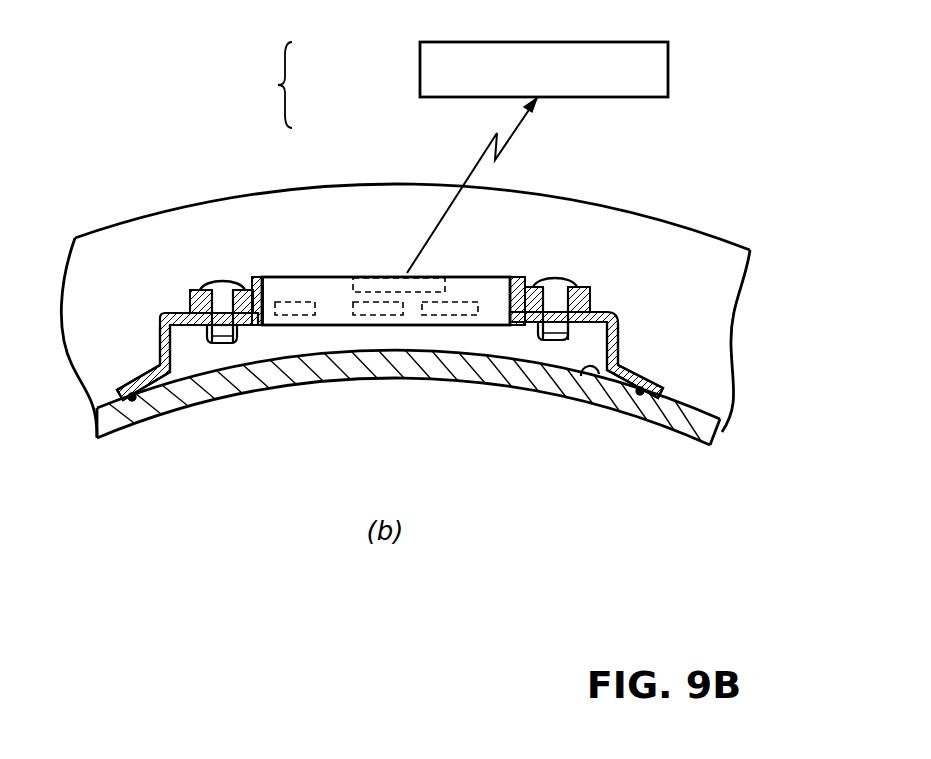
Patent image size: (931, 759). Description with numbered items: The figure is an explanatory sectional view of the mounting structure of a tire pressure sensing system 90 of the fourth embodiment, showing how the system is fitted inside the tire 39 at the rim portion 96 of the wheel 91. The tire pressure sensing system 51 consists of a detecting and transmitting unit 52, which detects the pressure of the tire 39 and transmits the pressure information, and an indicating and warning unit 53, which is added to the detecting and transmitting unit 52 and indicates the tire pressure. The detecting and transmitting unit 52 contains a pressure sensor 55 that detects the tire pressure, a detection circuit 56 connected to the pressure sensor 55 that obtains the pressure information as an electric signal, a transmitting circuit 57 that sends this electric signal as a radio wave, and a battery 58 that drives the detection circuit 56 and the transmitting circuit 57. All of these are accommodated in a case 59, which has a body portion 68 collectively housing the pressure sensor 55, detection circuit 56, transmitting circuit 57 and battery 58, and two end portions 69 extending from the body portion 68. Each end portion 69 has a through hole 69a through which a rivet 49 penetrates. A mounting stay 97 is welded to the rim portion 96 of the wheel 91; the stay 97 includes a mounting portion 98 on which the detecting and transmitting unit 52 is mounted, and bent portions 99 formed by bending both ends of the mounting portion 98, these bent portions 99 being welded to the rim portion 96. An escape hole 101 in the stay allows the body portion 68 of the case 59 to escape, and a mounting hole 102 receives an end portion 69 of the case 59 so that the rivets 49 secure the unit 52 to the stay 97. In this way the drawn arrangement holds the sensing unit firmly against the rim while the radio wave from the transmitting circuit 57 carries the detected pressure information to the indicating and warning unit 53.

The mounting structure of a tire pressure sensing system 90 is at (178, 92).
The tire pressure sensing system 51 is at (266, 85).
The indicating and warning unit 53 is at (420, 68).
The detecting and transmitting unit 52 is at (385, 258).
The tire 39 is at (627, 205).
The wheel 91 is at (675, 446).
The rim portion 96 is at (590, 372).
The mounting stay 97 is at (593, 290).
The mounting portion 98 is at (178, 312).
The bent portions 99 is at (162, 346).
The pressure sensor 55 is at (372, 278).
The detection circuit 56 is at (297, 302).
The transmitting circuit 57 is at (456, 301).
The battery 58 is at (266, 276).
The body portion 68 is at (497, 276).
The end portions 69 is at (197, 290).
The through holes 69a is at (230, 343).
The rivets 49 is at (228, 278).
The escape hole 101 is at (248, 327).
The mounting hole 102 is at (218, 338).
The case 59 is at (440, 265).